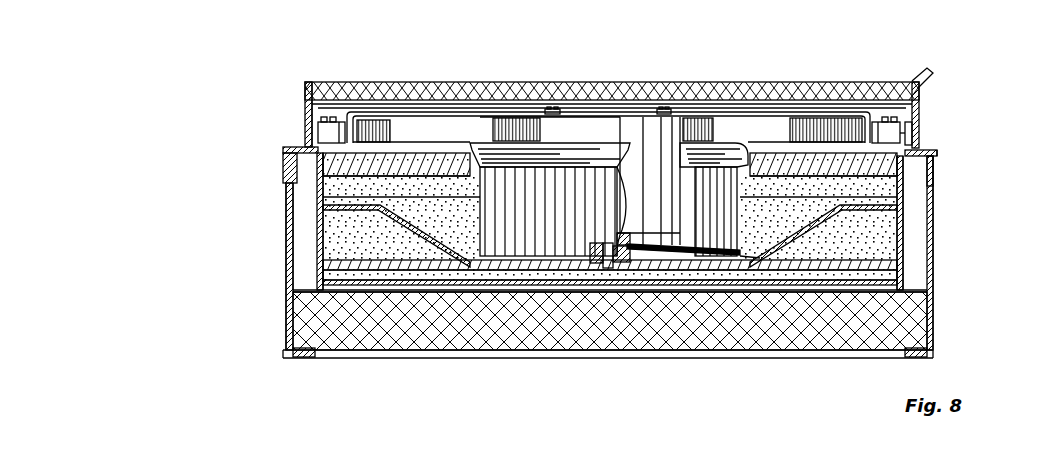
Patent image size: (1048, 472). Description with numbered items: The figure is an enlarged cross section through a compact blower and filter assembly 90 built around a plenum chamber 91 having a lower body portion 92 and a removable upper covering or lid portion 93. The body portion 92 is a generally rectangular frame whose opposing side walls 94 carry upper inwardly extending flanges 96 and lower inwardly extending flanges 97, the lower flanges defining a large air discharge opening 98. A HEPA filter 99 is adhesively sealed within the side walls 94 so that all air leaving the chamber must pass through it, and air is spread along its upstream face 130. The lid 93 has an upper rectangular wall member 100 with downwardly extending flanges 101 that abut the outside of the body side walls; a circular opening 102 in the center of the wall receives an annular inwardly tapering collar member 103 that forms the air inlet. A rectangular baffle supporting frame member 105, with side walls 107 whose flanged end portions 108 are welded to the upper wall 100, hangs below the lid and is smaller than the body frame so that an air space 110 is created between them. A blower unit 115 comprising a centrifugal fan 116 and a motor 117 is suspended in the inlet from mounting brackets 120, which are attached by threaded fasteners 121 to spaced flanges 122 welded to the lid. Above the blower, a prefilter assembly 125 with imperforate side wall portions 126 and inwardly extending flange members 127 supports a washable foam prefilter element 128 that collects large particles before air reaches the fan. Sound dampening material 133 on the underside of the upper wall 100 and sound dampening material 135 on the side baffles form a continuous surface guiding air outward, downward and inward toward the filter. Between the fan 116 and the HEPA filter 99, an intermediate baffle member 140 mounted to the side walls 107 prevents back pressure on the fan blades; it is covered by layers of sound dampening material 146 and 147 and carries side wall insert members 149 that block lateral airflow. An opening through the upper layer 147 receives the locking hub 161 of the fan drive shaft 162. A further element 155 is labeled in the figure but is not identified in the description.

The compact blower and filter assembly 90 is at (278, 133).
The plenum chamber 91 is at (280, 290).
The lower body portion 92 is at (293, 202).
The upper covering or lid portion 93 is at (950, 143).
The first pair of opposing side walls 94 is at (288, 266).
The upper inwardly extending flanges 96 is at (297, 156).
The lower inwardly extending flanges 97 is at (303, 341).
The air discharge opening 98 is at (443, 357).
The HEPA filter 99 is at (777, 330).
The upper wall member 100 is at (823, 148).
The downwardly extending flanges 101 is at (890, 200).
The circular opening 102 is at (485, 160).
The collar member 103 is at (770, 227).
The baffle supporting frame member 105 is at (910, 248).
The side walls 107 is at (318, 227).
The flanged end portions 108 is at (312, 145).
The air space 110 is at (918, 215).
The blower unit 115 is at (553, 108).
The centrifugal fan 116 is at (503, 215).
The motor 117 is at (652, 147).
The mounting brackets 120 is at (398, 118).
The threaded fasteners 121 is at (880, 138).
The spaced flanges 122 is at (340, 125).
The prefilter assembly 125 is at (304, 82).
The imperforate side wall portions 126 is at (913, 140).
The inwardly extending flange members 127 is at (925, 80).
The prefilter element 128 is at (780, 90).
The upstream face 130 is at (603, 288).
The sound dampening material 133 is at (933, 152).
The sound dampening material 135 is at (333, 188).
The intermediate baffle member 140 is at (832, 224).
The sound dampening material 146 is at (353, 268).
The sound dampening material 147 is at (847, 283).
The side wall insert members 149 is at (420, 230).
The pleated electrode 155 is at (463, 146).
The locking hub 161 is at (593, 250).
The fan drive shaft 162 is at (760, 257).